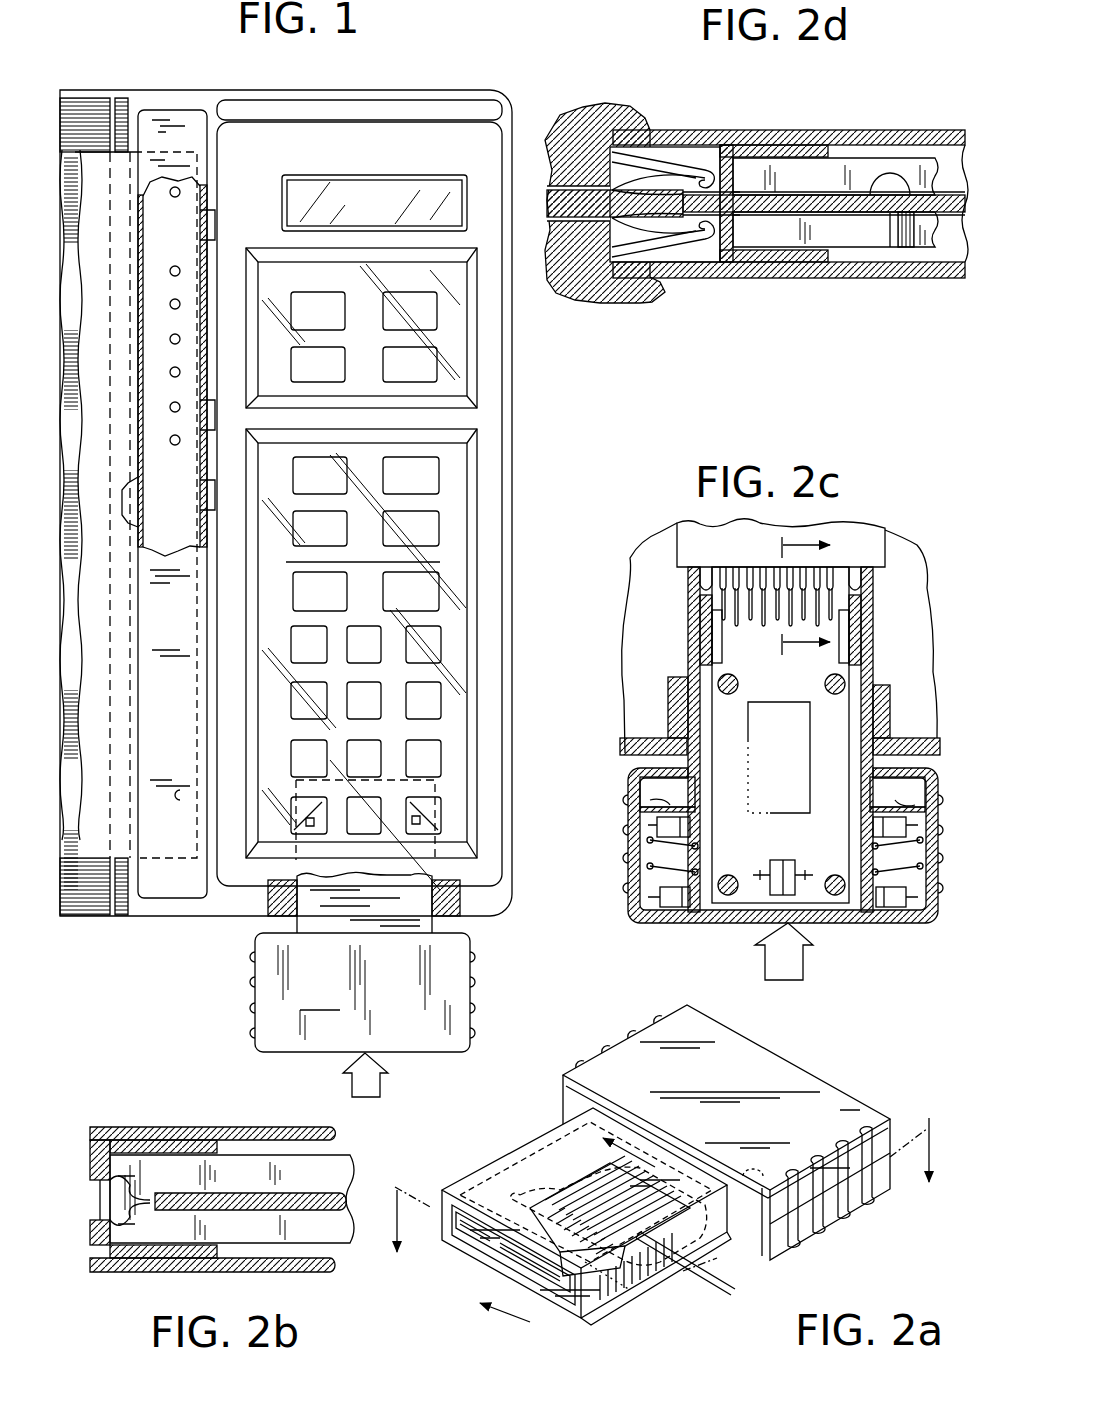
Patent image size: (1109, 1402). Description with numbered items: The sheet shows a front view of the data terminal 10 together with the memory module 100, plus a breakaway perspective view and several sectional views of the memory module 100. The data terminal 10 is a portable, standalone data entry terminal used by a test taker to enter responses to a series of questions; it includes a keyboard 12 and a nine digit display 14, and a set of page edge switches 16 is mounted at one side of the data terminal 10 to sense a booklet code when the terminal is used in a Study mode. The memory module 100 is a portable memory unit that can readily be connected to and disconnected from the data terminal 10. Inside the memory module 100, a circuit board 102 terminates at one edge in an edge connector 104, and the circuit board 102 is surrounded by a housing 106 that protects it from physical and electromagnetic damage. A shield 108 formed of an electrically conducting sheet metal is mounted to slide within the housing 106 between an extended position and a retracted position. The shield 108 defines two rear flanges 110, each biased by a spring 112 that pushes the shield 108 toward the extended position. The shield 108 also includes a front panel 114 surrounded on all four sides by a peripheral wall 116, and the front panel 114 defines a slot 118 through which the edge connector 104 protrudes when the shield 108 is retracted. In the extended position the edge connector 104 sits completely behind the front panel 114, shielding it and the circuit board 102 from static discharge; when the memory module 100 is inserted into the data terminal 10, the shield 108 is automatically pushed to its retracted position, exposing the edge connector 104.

In FIG. 1, the data terminal 10 is at (518, 636).
In FIG. 2D, the data terminal 10 is at (600, 108).
In FIG. 2C, the data terminal 10 is at (618, 699).
In FIG. 1, the keyboard 12 is at (447, 476).
In FIG. 1, the nine digit display 14 is at (400, 192).
In FIG. 1, the page edge switches 16 is at (162, 222).
In FIG. 1, the memory module 100 is at (248, 968).
In FIG. 2D, the memory module 100 is at (827, 283).
In FIG. 2C, the memory module 100 is at (622, 847).
In FIG. 2A, the memory module 100 is at (557, 1095).
In FIG. 2D, the circuit board 102 is at (888, 214).
In FIG. 2C, the circuit board 102 is at (812, 676).
In FIG. 2B, the circuit board 102 is at (280, 1197).
In FIG. 2A, the circuit board 102 is at (665, 1236).
In FIG. 2D, the edge connector 104 is at (680, 207).
In FIG. 2C, the edge connector 104 is at (838, 582).
In FIG. 2B, the edge connector 104 is at (168, 1196).
In FIG. 2A, the edge connector 104 is at (613, 1198).
In FIG. 2D, the housing 106 is at (940, 279).
In FIG. 2C, the housing 106 is at (692, 925).
In FIG. 2B, the housing 106 is at (305, 1271).
In FIG. 2A, the housing 106 is at (638, 1275).
In FIG. 2D, the shield 108 is at (762, 252).
In FIG. 2C, the shield 108 is at (700, 616).
In FIG. 2B, the shield 108 is at (232, 1199).
In FIG. 2A, the shield 108 is at (585, 1320).
In FIG. 2C, the rear flanges 110 is at (640, 790).
In FIG. 2C, the spring 112 is at (912, 845).
In FIG. 2D, the front panel 114 is at (722, 236).
In FIG. 2C, the front panel 114 is at (860, 600).
In FIG. 2B, the front panel 114 is at (93, 1243).
In FIG. 2A, the front panel 114 is at (465, 1246).
In FIG. 2D, the peripheral wall 116 is at (780, 150).
In FIG. 2C, the peripheral wall 116 is at (780, 630).
In FIG. 2B, the peripheral wall 116 is at (175, 1252).
In FIG. 2A, the peripheral wall 116 is at (520, 1216).
In FIG. 2D, the slot 118 is at (731, 203).
In FIG. 2B, the slot 118 is at (130, 1176).
In FIG. 2A, the slot 118 is at (490, 1256).